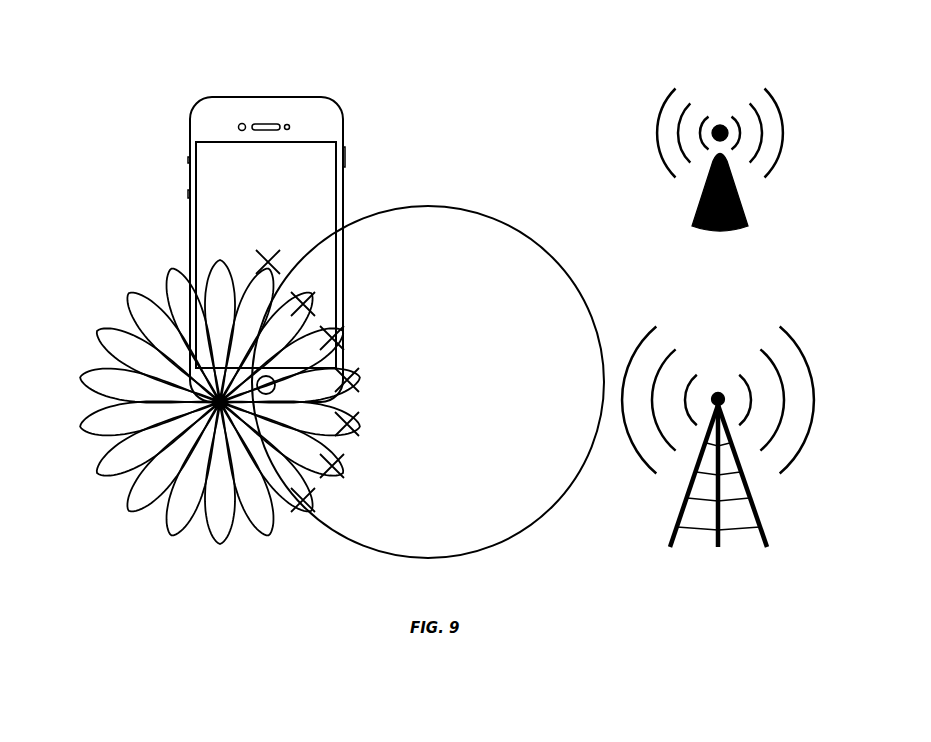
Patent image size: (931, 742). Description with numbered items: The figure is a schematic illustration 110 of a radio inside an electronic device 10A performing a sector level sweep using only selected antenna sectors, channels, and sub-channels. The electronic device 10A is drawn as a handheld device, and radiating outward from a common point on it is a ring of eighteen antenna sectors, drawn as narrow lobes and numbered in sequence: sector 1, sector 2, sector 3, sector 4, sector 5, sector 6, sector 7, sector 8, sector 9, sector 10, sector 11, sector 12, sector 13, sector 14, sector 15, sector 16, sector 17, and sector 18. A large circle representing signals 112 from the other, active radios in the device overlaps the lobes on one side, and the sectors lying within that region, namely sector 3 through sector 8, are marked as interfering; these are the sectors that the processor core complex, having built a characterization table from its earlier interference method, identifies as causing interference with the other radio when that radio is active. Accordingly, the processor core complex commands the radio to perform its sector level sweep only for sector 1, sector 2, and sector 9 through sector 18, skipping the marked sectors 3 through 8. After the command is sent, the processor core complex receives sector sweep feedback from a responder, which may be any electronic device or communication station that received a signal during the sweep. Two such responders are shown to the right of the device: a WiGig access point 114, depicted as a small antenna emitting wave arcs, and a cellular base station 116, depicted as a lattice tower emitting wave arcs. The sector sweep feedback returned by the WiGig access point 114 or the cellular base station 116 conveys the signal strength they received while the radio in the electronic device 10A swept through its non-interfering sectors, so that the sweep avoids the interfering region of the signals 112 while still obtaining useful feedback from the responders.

The illustration 110 is at (592, 40).
The electronic device 10A is at (265, 97).
The signals 112 is at (428, 206).
The WiGig access point 114 is at (783, 84).
The cellular base station 116 is at (783, 320).
The sector number 1 is at (220, 315).
The sector number 2 is at (245, 320).
The sector number 3 is at (269, 336).
The sector number 4 is at (292, 362).
The sector number 5 is at (304, 389).
The sector number 6 is at (305, 414).
The sector number 7 is at (294, 440).
The sector number 8 is at (273, 464).
The sector number 9 is at (244, 484).
The sector number 10 is at (220, 492).
The sector number 11 is at (195, 484).
The sector number 12 is at (169, 469).
The sector number 13 is at (148, 442).
The sector number 14 is at (136, 415).
The sector number 15 is at (136, 390).
The sector number 16 is at (150, 364).
The sector number 17 is at (169, 345).
The sector number 18 is at (192, 327).